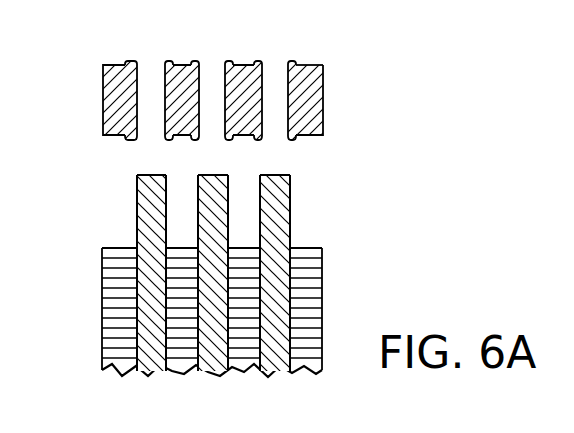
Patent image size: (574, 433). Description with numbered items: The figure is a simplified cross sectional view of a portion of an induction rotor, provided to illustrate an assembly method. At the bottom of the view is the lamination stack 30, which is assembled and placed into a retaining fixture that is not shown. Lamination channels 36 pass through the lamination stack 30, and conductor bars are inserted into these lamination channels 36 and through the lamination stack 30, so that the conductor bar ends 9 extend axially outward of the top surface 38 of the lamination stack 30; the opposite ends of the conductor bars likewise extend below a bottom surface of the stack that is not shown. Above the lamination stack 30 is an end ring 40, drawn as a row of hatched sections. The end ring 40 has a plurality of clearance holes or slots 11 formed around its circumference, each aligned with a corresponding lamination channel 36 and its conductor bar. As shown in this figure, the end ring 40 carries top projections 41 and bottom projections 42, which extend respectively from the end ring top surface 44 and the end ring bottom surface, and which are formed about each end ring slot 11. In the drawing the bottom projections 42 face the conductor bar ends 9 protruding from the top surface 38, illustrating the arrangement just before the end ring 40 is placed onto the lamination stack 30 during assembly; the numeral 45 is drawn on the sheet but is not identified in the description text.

The conductor bar ends 9 is at (212, 173).
The clearance holes/slots 11 is at (137, 101).
The lamination stack 30 is at (323, 305).
The lamination channels 36 is at (260, 302).
The top surface 38 is at (118, 248).
The end ring 40 is at (323, 98).
The top projections 41 is at (130, 61).
The bottom projections 42 is at (194, 141).
The end ring top surface 44 is at (318, 67).
The bottom surface 45 is at (296, 140).